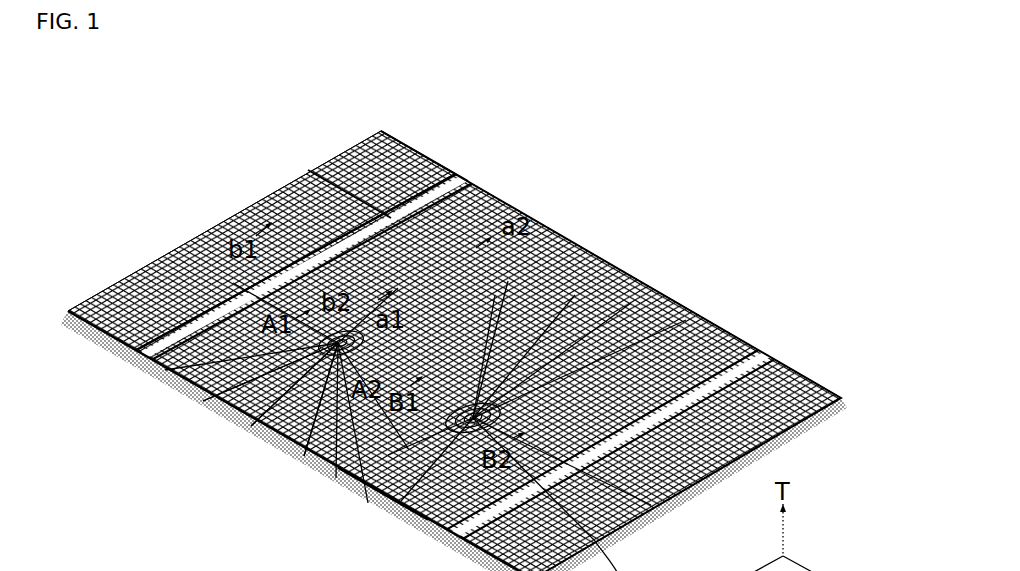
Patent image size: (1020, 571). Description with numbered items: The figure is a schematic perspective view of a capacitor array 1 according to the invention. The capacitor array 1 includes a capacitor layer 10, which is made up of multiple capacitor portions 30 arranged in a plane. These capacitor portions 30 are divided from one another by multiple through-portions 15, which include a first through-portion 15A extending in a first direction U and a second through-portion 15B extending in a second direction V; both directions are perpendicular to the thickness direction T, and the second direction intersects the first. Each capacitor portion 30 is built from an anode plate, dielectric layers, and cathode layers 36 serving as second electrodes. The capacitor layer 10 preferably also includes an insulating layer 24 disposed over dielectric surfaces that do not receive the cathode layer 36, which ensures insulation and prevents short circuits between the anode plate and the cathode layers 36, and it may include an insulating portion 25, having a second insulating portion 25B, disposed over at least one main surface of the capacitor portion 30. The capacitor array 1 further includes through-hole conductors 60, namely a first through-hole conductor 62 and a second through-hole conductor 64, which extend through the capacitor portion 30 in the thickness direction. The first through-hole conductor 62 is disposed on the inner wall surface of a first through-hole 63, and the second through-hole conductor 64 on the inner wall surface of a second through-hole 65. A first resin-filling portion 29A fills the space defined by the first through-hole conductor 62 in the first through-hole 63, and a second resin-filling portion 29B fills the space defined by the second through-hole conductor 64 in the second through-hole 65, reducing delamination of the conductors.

The capacitor array 1 is at (200, 150).
The capacitor layer 10 is at (120, 276).
The through-portions 15 is at (299, 66).
The first through-portion 15A is at (318, 160).
The second through-portion 15B is at (268, 185).
The insulating layer 24 is at (157, 365).
The insulating portion 25 is at (225, 275).
The second insulating portion 25B is at (623, 295).
The first resin-filling portion 29A is at (487, 287).
The second resin-filling portion 29B is at (567, 287).
The capacitor portion 30 is at (413, 525).
The cathode layer 36 is at (377, 502).
The through-hole conductors 60 is at (277, 527).
The first through-hole conductor 62 is at (240, 415).
The first through-hole 63 is at (193, 393).
The second through-hole conductor 64 is at (297, 442).
The second through-hole 65 is at (327, 472).